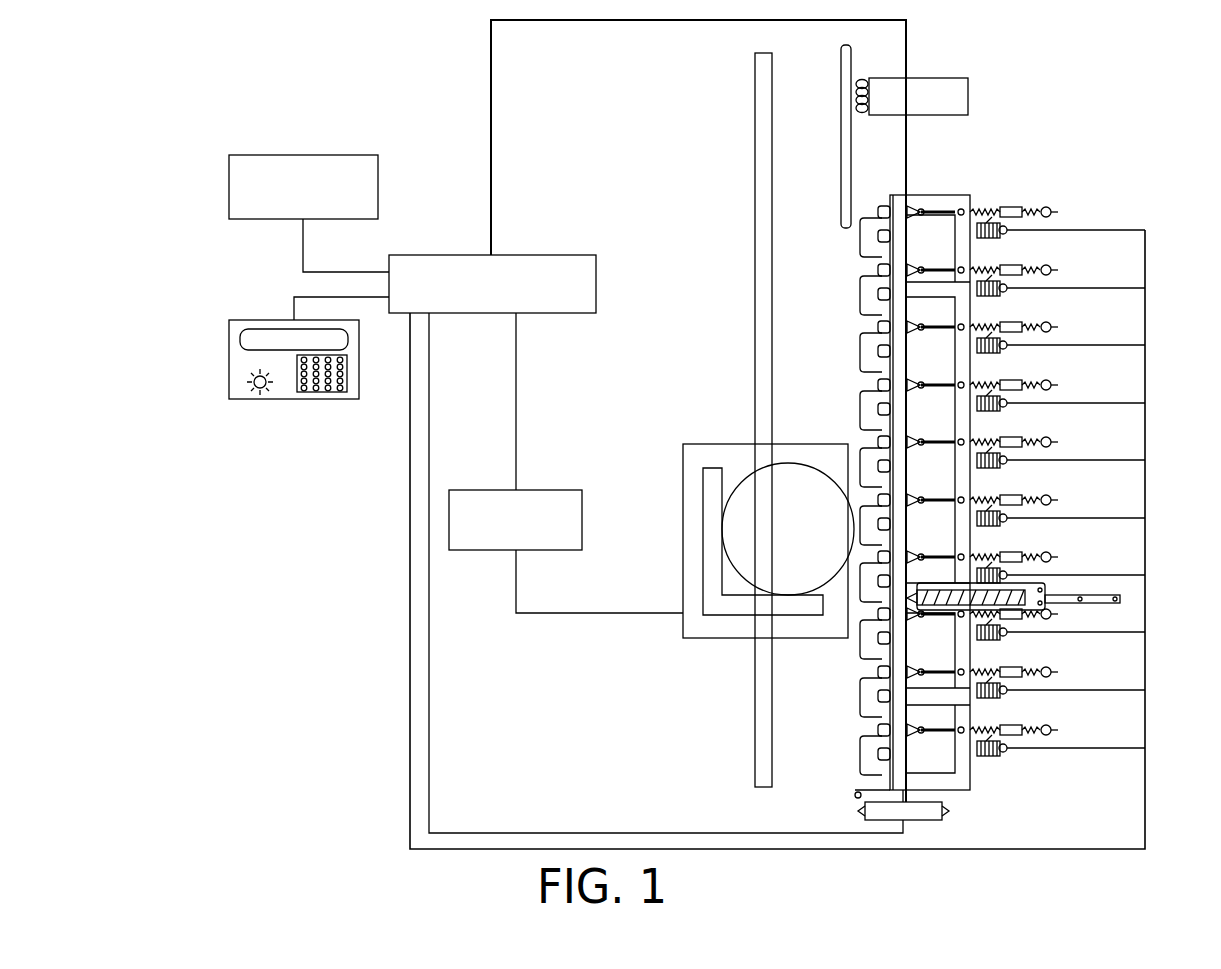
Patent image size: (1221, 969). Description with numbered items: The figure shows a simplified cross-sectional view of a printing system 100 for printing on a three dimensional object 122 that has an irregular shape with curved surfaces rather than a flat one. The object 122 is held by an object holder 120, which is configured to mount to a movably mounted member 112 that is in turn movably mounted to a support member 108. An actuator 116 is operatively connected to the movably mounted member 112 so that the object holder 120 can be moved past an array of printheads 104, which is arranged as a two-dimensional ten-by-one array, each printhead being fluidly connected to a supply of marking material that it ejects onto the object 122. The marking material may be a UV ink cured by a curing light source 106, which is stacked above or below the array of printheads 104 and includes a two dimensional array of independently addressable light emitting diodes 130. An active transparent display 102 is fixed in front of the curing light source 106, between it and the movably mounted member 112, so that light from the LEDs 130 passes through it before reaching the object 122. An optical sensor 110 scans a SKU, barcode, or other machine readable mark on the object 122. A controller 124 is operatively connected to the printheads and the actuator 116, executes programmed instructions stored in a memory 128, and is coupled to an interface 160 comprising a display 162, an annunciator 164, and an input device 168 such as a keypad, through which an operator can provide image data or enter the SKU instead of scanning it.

The printing system 100 is at (320, 74).
The active transparent display 102 is at (841, 163).
The array of printheads 104 is at (838, 348).
The curing light source 106 is at (940, 78).
The support member 108 is at (755, 702).
The optical sensor 110 is at (945, 812).
The movably mounted member 112 is at (726, 531).
The actuator 116 is at (545, 490).
The object holder 120 is at (703, 508).
The object 122 is at (748, 478).
The controller 124 is at (541, 313).
The memory 128 is at (229, 186).
The light emitting diodes 130 is at (858, 80).
The interface 160 is at (288, 369).
The display 162 is at (262, 329).
The annunciator 164 is at (255, 384).
The input device 168 is at (333, 392).